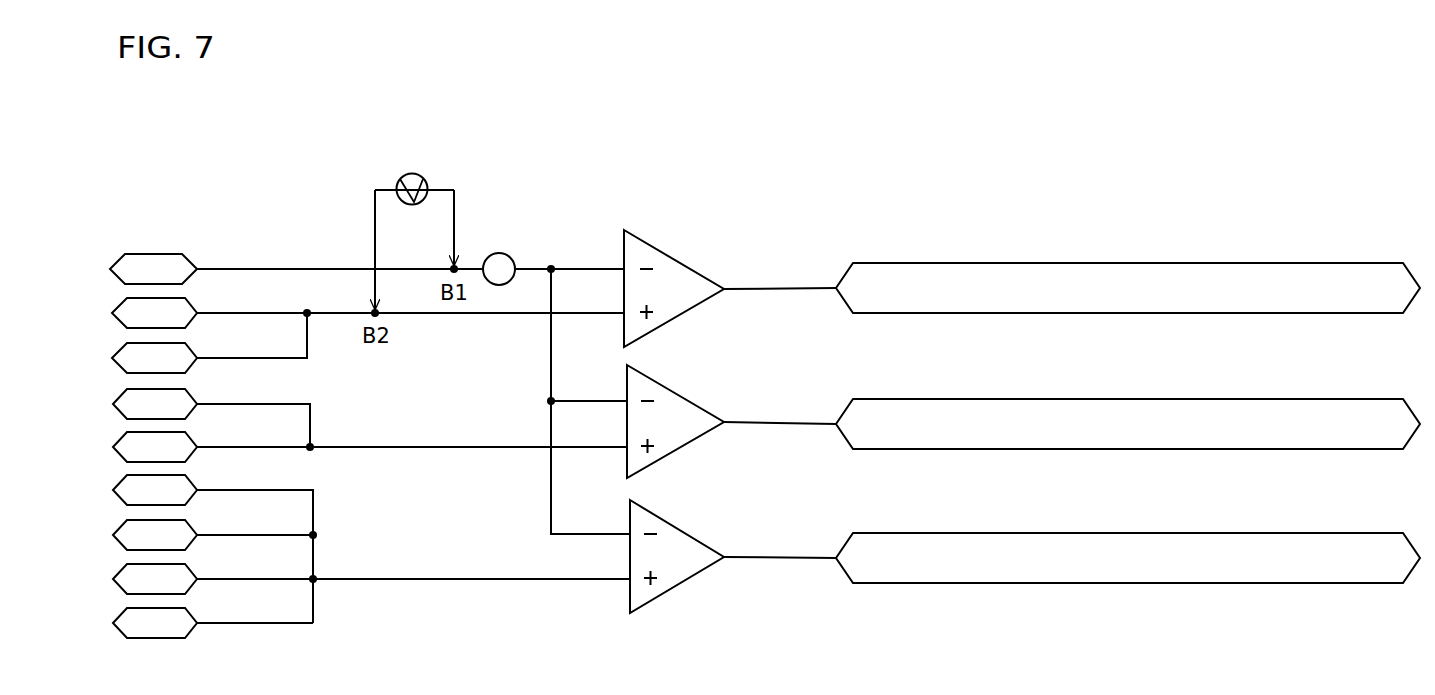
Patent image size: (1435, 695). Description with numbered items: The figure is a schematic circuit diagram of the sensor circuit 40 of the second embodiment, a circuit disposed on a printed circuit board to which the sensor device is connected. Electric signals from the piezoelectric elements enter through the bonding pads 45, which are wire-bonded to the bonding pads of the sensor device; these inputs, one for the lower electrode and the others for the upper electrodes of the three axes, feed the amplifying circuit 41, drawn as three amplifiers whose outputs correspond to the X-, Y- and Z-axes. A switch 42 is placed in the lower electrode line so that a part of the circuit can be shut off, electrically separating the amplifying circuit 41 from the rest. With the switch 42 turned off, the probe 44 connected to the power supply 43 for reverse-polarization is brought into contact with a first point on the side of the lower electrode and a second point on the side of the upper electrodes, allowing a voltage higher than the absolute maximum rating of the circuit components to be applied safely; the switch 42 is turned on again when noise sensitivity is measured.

The sensor circuit 40 is at (1022, 351).
The amplifying circuit 41 is at (680, 265).
The switch 42 is at (509, 256).
The power supply 43 is at (412, 173).
The probe 44 is at (375, 218).
The bonding pads 45 is at (115, 264).